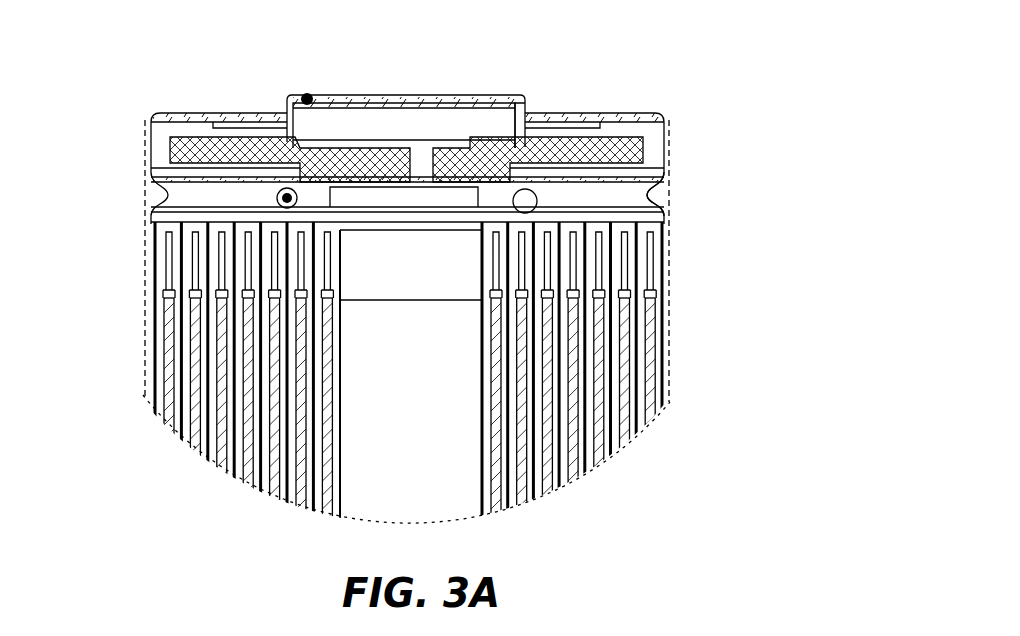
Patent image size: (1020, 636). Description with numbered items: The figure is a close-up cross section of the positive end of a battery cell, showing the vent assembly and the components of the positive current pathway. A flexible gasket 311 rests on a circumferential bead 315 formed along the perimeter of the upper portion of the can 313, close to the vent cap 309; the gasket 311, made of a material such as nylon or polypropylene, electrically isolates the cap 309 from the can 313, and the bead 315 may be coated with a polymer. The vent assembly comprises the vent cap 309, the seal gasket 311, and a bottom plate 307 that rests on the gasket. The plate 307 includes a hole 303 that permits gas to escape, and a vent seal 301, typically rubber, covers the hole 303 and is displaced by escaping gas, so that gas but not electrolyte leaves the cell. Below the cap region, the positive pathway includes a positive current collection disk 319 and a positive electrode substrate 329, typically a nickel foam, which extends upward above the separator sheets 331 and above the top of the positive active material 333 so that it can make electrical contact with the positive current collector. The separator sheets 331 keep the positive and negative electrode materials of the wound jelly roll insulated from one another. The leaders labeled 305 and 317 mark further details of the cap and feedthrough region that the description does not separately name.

The vent seal 301 is at (368, 135).
The hole 303 is at (407, 180).
The lid wall / insulator 305 is at (537, 147).
The bottom plate 307 is at (615, 150).
The vent cap 309 is at (303, 97).
The flexible gasket 311 is at (150, 121).
The can 313 is at (470, 380).
The circumferential bead 315 is at (662, 195).
The feedthrough pin 317 is at (276, 199).
The positive current collection disk 319 is at (290, 229).
The positive electrode substrate 329 is at (665, 230).
The separator sheets 331 is at (612, 228).
The positive active material 333 is at (605, 260).